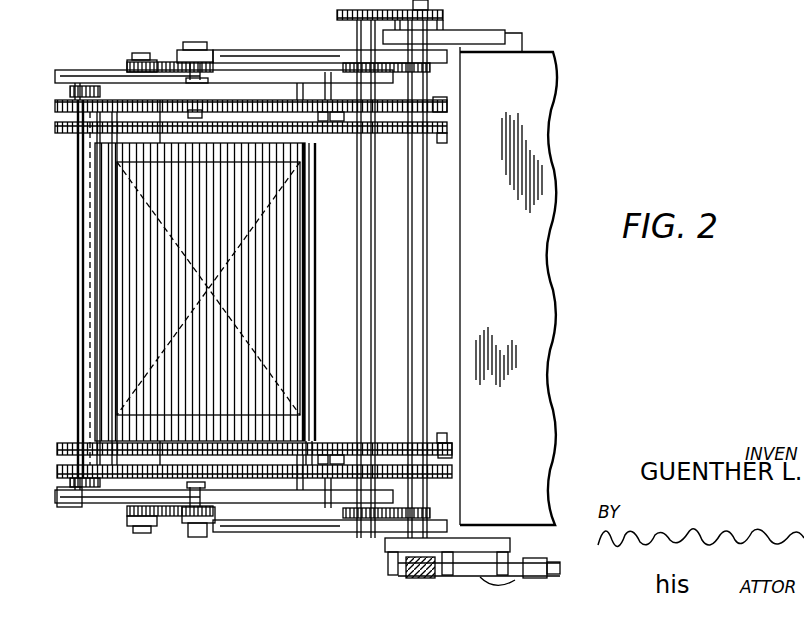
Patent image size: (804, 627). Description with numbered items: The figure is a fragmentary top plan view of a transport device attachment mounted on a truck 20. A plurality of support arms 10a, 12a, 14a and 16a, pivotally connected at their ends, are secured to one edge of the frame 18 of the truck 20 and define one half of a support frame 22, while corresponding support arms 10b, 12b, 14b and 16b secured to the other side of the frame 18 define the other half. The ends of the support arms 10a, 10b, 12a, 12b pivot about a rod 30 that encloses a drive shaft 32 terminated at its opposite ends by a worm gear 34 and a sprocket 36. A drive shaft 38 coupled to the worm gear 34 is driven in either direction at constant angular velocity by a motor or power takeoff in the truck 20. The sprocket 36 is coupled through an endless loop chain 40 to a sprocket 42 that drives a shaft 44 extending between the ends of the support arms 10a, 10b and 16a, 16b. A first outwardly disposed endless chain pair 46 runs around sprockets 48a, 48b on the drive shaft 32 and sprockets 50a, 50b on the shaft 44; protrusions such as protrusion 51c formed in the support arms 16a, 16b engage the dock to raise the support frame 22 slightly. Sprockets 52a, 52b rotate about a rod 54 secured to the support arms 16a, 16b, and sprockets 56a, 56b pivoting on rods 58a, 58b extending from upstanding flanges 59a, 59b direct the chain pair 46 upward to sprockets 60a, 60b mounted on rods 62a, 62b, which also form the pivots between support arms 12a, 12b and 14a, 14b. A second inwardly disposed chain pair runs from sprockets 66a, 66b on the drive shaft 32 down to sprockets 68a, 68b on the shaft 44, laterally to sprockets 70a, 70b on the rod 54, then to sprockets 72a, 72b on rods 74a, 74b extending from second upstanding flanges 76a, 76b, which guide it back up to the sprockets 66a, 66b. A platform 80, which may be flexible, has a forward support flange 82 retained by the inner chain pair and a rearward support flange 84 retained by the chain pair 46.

The support arm 10a is at (445, 509).
The support arm 10b is at (423, 69).
The support arm 12a is at (285, 524).
The support arm 12b is at (255, 58).
The support arm 14a is at (130, 509).
The support arm 14b is at (127, 62).
The support arm 16a is at (105, 503).
The support arm 16b is at (82, 78).
The frame 18 is at (522, 33).
The truck 20 is at (518, 291).
The support frame 22 is at (255, 548).
The rod 30 is at (430, 236).
The drive shaft 32 is at (397, 561).
The worm gear 34 is at (410, 576).
The sprocket 36 is at (443, 26).
The drive shaft 38 is at (530, 587).
The endless loop chain 40 is at (430, 7).
The sprocket 42 is at (350, 68).
The shaft 44 is at (345, 22).
The endless chain pair 46 is at (161, 100).
The sprocket 48a is at (440, 106).
The sprocket 48b is at (440, 485).
The sprocket 50a is at (353, 103).
The sprocket 50b is at (350, 470).
The protrusion 51c is at (50, 6).
The sprocket 52a is at (107, 71).
The sprocket 52b is at (67, 458).
The rod 54 is at (80, 278).
The sprocket 56a is at (67, 110).
The sprocket 56b is at (72, 474).
The rod 58a is at (80, 91).
The rod 58b is at (85, 493).
The upstanding flange 59a is at (72, 75).
The upstanding flange 59b is at (78, 488).
The sprocket 60a is at (213, 100).
The sprocket 60b is at (216, 478).
The rod 62a is at (160, 62).
The rod 62b is at (193, 487).
The sprocket 66a is at (437, 136).
The sprocket 66b is at (443, 458).
The sprocket 68a is at (377, 137).
The sprocket 68b is at (427, 418).
The sprocket 70a is at (78, 140).
The sprocket 70b is at (78, 443).
The sprocket 72a is at (292, 100).
The sprocket 72b is at (293, 416).
The rod 74a is at (338, 133).
The rod 74b is at (310, 458).
The upstanding flange 76a is at (303, 146).
The upstanding flange 76b is at (306, 440).
The platform 80 is at (290, 251).
The forward support flange 82 is at (318, 316).
The rearward support flange 84 is at (88, 224).